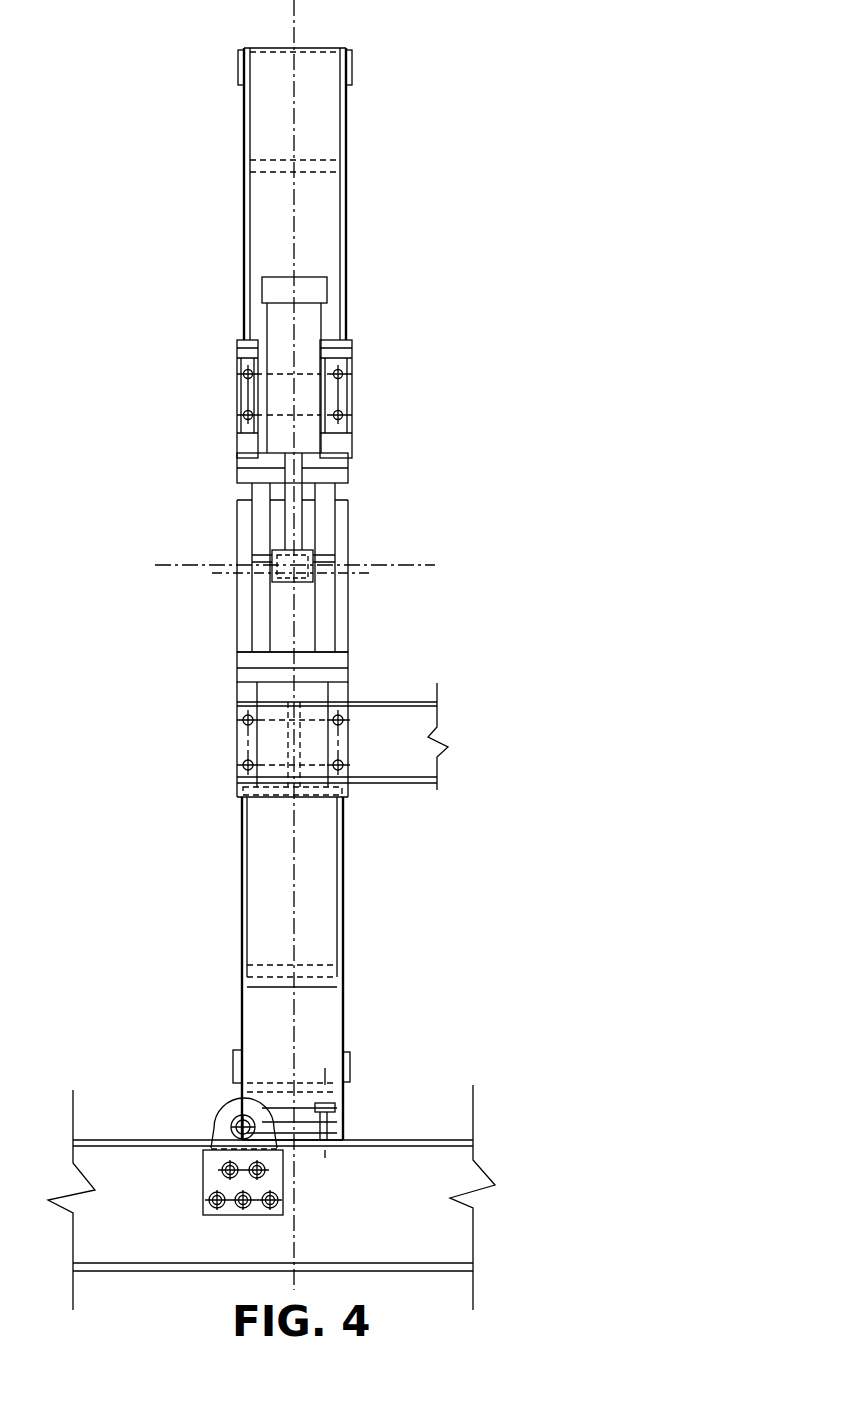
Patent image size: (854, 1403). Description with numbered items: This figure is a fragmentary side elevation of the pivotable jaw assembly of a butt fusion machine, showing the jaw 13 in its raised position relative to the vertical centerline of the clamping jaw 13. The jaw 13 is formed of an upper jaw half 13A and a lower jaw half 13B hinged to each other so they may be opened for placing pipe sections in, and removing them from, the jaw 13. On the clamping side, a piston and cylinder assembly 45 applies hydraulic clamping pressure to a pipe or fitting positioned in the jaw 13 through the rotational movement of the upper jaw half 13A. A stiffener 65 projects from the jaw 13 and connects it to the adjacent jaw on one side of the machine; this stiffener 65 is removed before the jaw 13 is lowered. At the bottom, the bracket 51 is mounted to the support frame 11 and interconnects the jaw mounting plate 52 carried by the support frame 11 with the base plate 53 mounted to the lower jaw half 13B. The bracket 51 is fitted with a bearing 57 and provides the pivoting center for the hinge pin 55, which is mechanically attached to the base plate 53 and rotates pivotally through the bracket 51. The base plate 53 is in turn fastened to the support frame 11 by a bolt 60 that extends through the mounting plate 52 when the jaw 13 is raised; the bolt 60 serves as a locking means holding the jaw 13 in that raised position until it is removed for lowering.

The support frame 11 is at (446, 1225).
The jaw 13 is at (346, 95).
The upper jaw half 13A is at (262, 141).
The lower jaw half 13B is at (258, 830).
The piston and cylinder assembly 45 is at (307, 325).
The stiffener 65 is at (405, 723).
The bearing 57 is at (240, 1114).
The hinge pin 55 is at (236, 1120).
The bracket 51 is at (215, 1182).
The bolt 60 is at (337, 1096).
The base plate 53 is at (338, 1116).
The jaw mounting plate 52 is at (335, 1138).